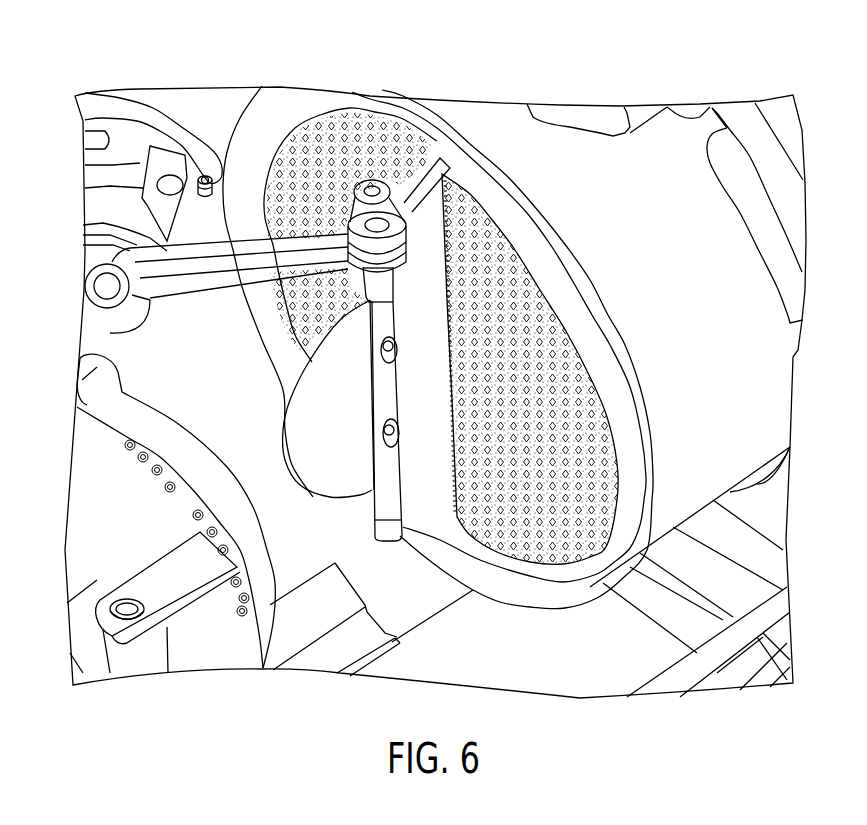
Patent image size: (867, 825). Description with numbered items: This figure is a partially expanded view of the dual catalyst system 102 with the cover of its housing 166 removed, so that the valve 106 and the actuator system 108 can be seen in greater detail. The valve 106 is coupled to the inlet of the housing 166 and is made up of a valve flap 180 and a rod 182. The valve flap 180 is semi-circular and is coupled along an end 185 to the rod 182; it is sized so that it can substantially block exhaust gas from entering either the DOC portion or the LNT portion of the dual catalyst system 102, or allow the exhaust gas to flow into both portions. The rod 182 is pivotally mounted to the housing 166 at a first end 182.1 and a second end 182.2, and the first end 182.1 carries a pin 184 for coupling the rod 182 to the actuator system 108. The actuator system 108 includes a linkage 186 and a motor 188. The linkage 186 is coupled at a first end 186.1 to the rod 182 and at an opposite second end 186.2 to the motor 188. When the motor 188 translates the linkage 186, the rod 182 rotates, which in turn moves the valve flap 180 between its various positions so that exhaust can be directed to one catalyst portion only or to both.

The dual catalyst system 102 is at (510, 593).
The valve 106 is at (253, 446).
The actuator system 108 is at (216, 127).
The housing 166 is at (500, 175).
The valve flap 180 is at (307, 453).
The rod 182 is at (392, 387).
The first end 182.1 is at (376, 287).
The second end 182.2 is at (393, 500).
The pin 184 is at (380, 184).
The end 185 is at (393, 347).
The linkage 186 is at (300, 243).
The first end 186.1 is at (448, 160).
The second end 186.2 is at (87, 284).
The motor 188 is at (110, 202).